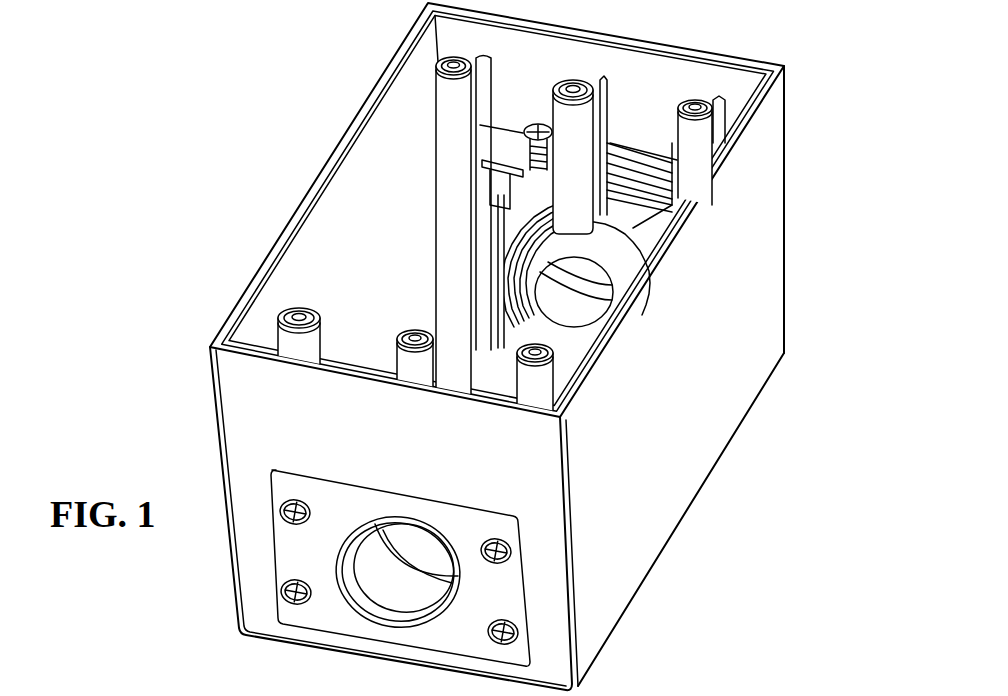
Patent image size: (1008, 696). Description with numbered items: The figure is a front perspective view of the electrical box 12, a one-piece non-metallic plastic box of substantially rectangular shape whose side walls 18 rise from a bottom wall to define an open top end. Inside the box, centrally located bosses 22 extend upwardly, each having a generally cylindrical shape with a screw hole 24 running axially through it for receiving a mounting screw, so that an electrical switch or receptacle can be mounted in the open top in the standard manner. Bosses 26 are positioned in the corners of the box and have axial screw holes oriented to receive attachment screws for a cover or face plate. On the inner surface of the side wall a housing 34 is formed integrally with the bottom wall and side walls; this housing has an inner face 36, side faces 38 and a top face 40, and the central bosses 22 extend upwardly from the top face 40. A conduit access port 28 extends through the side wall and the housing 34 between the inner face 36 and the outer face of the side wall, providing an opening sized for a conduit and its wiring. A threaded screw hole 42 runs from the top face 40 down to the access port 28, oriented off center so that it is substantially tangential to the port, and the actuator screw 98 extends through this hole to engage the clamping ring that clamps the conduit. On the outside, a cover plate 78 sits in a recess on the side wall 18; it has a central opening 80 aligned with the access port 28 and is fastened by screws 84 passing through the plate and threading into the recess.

The electrical box 12 is at (787, 270).
The side walls 18 is at (255, 405).
The centrally located bosses 22 is at (582, 132).
The screw hole 24 is at (573, 82).
The corner bosses 26 is at (436, 87).
The conduit access port 28 is at (405, 580).
The housing 34 is at (612, 241).
The inner face 36 is at (573, 347).
The side faces 38 is at (520, 287).
The top face 40 is at (523, 175).
The screw hole 42 is at (553, 172).
The cover plate 78 is at (530, 592).
The central opening 80 is at (415, 625).
The screws 84 is at (297, 505).
The actuator screw 98 is at (536, 126).